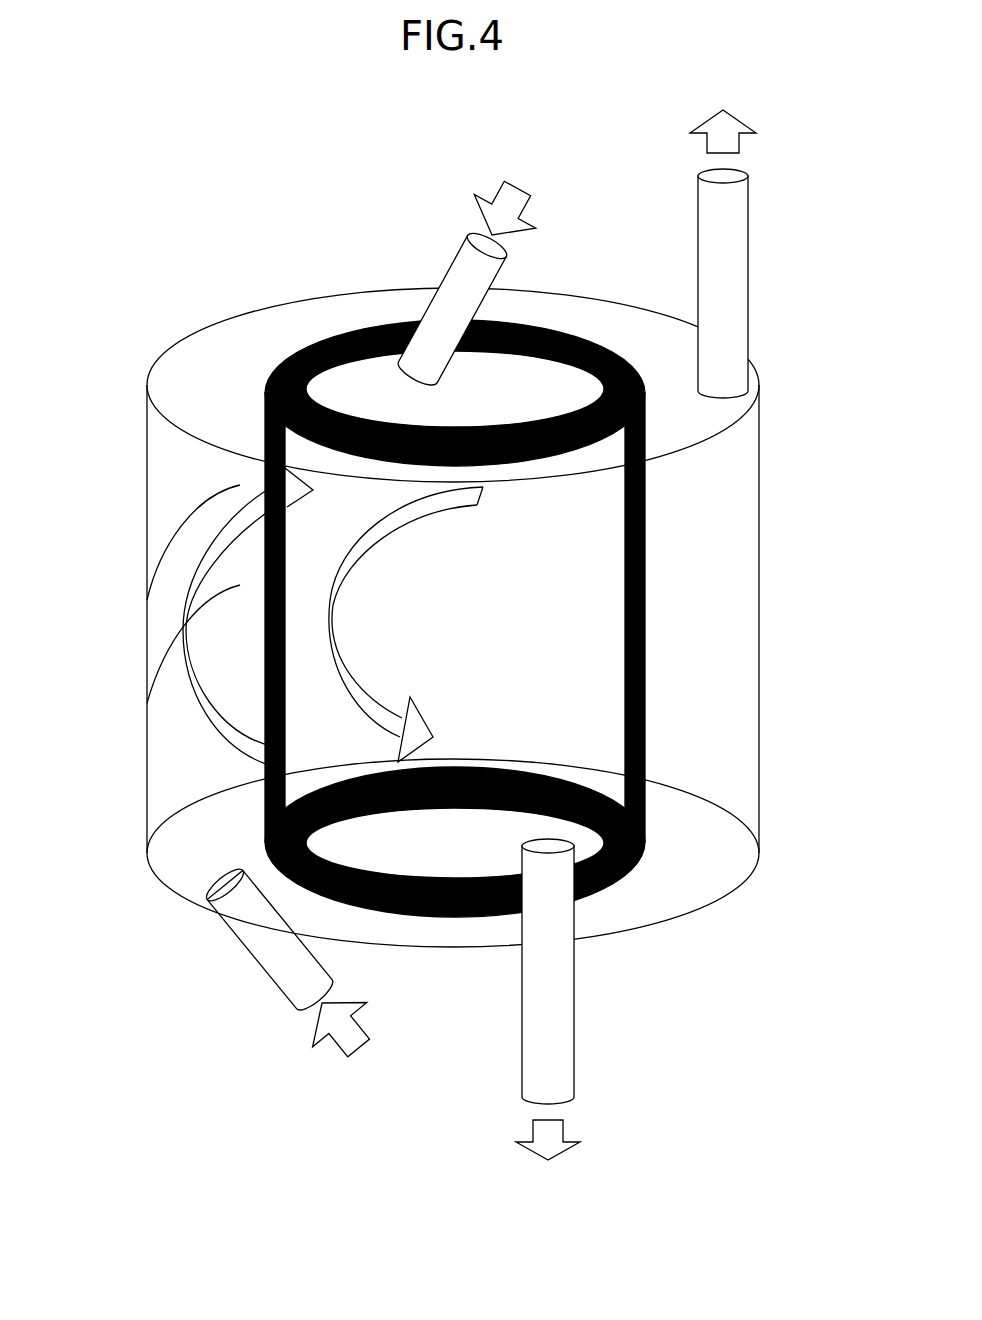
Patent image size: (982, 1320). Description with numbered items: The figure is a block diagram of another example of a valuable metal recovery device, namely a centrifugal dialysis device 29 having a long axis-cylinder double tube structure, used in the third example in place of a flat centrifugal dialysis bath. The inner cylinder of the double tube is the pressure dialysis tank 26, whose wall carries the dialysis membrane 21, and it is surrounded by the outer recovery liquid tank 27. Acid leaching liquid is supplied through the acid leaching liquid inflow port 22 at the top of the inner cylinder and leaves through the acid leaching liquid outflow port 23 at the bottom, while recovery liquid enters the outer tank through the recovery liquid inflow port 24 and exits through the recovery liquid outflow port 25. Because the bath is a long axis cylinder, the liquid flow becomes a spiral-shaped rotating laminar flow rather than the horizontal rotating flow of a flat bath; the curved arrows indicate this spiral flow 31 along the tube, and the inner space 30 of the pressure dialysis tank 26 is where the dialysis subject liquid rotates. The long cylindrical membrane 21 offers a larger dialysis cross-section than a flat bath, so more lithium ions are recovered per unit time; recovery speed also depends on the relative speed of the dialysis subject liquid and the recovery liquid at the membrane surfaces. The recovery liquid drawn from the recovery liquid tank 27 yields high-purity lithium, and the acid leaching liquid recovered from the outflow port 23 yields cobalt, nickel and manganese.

The dialysis membrane 21 is at (263, 428).
The acid leaching liquid inflow port 22 is at (470, 271).
The acid leaching liquid outflow port 23 is at (548, 1019).
The recovery liquid inflow port 24 is at (294, 973).
The recovery liquid outflow port 25 is at (723, 238).
The pressure dialysis tank 26 is at (558, 380).
The recovery liquid tank 27 is at (735, 457).
The centrifugal dialysis device 29 is at (449, 651).
The inner space 30 is at (480, 413).
The circulating flow 31 is at (130, 580).